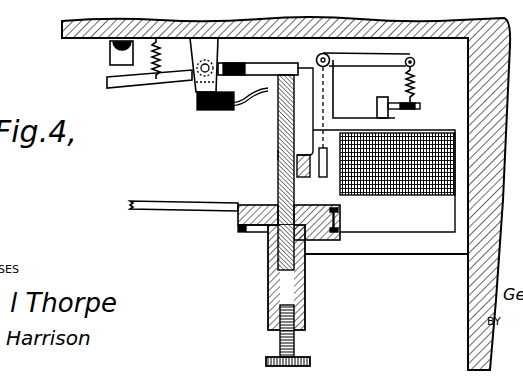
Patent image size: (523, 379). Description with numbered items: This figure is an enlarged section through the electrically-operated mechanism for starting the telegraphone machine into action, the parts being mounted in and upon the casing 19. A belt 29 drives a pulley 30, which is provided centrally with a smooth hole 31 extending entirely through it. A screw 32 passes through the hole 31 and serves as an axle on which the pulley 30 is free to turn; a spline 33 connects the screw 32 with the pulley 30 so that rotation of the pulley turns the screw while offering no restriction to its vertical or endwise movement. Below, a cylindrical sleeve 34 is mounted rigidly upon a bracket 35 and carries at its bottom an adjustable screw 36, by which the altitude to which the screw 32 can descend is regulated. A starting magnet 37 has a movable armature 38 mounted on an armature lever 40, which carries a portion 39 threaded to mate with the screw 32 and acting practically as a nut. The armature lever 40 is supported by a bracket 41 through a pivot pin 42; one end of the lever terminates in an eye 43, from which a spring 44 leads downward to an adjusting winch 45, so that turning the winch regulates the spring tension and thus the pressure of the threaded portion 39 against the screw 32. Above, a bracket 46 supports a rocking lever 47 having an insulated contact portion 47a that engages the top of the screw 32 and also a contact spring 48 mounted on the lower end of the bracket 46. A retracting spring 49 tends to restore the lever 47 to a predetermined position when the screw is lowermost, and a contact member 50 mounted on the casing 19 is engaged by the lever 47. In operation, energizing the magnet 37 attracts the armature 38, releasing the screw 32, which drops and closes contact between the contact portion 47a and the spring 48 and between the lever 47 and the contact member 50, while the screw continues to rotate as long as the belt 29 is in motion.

The casing 19 is at (498, 80).
The belt 29 is at (170, 203).
The pulley 30 is at (238, 228).
The smooth hole 31 is at (263, 206).
The screw 32 is at (278, 122).
The spline 33 is at (277, 155).
The sleeve 34 is at (306, 284).
The bracket 35 is at (396, 252).
The adjustable screw 36 is at (308, 358).
The starting magnet 37 is at (388, 197).
The armature 38 is at (325, 178).
The threaded portion 39 is at (309, 168).
The armature lever 40 is at (313, 137).
The bracket 41 is at (332, 82).
The pivot pin 42 is at (318, 56).
The eye 43 is at (415, 60).
The spring 44 is at (418, 84).
The adjusting winch 45 is at (422, 106).
The bracket 46 is at (217, 52).
The rocking lever 47 is at (168, 80).
The contact portion 47a is at (268, 66).
The contact spring 48 is at (253, 96).
The retracting spring 49 is at (159, 67).
The contact member 50 is at (110, 58).